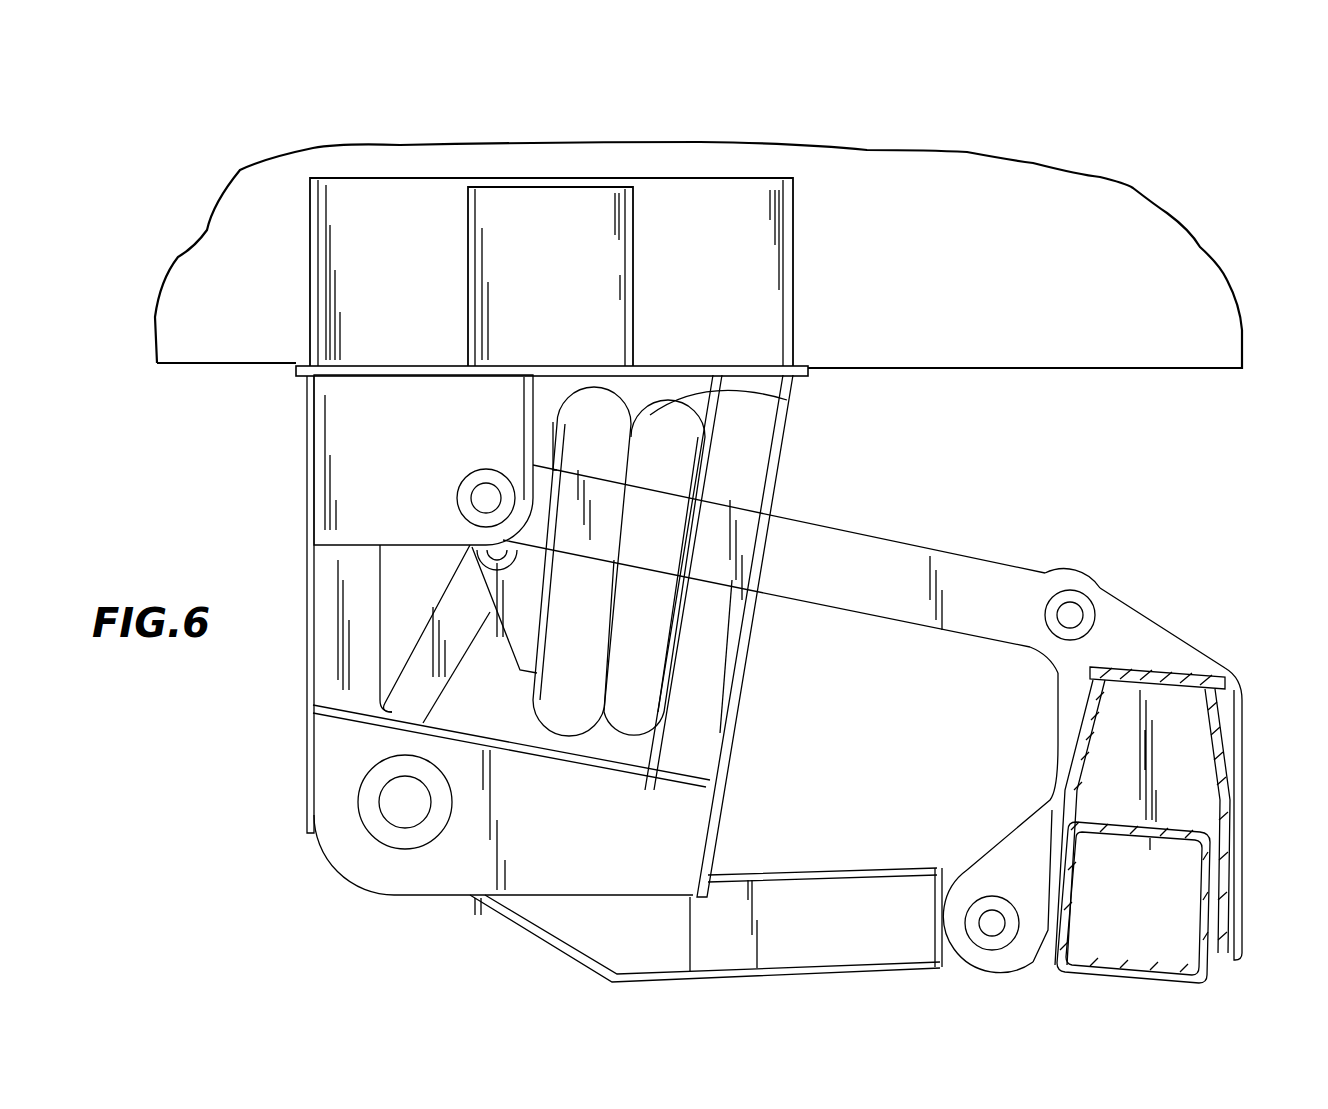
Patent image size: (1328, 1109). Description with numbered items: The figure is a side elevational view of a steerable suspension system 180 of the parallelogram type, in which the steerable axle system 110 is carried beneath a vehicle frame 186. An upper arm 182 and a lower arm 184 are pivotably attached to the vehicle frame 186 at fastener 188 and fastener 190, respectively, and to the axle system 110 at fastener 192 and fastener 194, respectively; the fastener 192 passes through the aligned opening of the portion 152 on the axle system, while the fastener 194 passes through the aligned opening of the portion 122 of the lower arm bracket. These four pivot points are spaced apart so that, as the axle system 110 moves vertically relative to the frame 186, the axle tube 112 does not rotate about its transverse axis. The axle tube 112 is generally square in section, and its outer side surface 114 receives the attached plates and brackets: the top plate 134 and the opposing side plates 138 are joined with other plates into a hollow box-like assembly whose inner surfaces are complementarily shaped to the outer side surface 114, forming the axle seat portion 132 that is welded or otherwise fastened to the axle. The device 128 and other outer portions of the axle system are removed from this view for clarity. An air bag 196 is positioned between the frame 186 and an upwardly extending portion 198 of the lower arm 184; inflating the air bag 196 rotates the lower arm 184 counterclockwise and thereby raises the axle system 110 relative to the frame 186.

The axle system 110 is at (1245, 847).
The axle tube 112 is at (1136, 988).
The outer side surface 114 is at (1165, 830).
The portion 122 is at (977, 973).
The device 128 is at (1232, 741).
The axle seat portion 132 is at (1073, 800).
The top plate 134 is at (1167, 675).
The side plates 138 is at (1080, 733).
The portion 152 is at (1072, 572).
The steerable suspension system 180 is at (468, 952).
The upper arm 182 is at (837, 527).
The lower arm 184 is at (858, 872).
The vehicle frame 186 is at (231, 367).
The fastener 188 is at (474, 488).
The fastener 190 is at (406, 826).
The fastener 192 is at (1082, 604).
The fastener 194 is at (996, 934).
The air bag 196 is at (788, 399).
The upwardly extending portion 198 is at (427, 620).